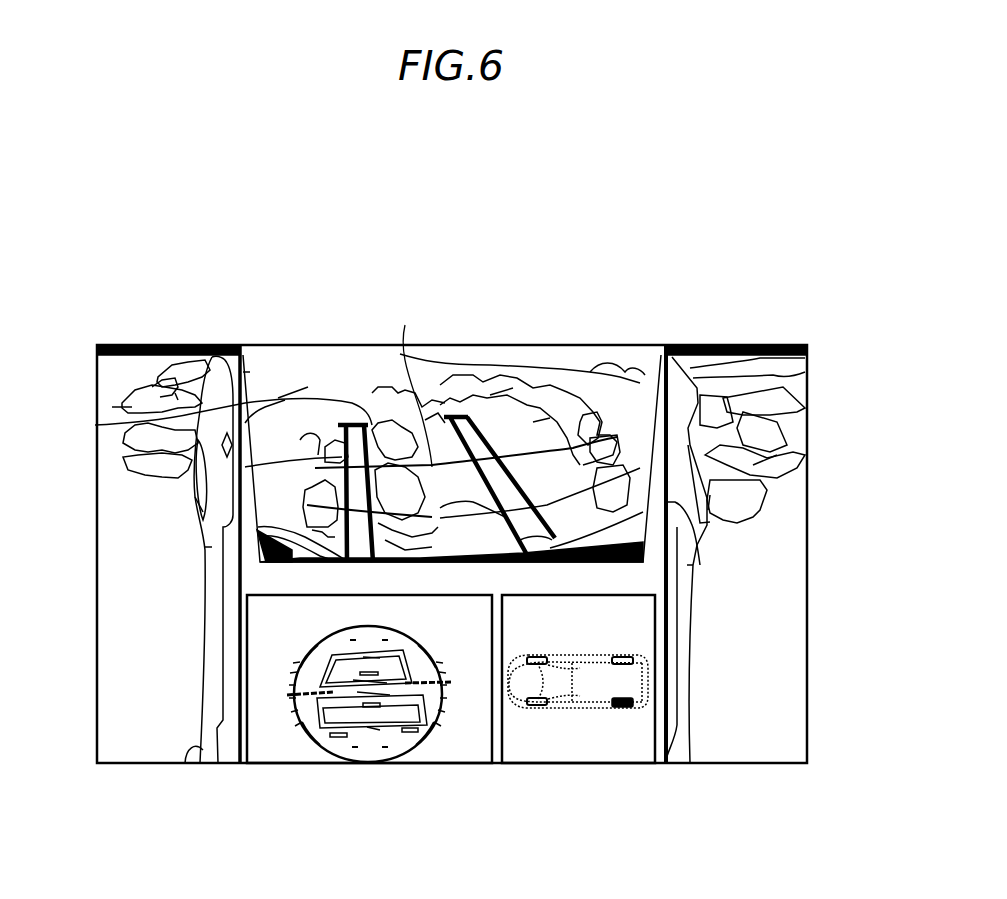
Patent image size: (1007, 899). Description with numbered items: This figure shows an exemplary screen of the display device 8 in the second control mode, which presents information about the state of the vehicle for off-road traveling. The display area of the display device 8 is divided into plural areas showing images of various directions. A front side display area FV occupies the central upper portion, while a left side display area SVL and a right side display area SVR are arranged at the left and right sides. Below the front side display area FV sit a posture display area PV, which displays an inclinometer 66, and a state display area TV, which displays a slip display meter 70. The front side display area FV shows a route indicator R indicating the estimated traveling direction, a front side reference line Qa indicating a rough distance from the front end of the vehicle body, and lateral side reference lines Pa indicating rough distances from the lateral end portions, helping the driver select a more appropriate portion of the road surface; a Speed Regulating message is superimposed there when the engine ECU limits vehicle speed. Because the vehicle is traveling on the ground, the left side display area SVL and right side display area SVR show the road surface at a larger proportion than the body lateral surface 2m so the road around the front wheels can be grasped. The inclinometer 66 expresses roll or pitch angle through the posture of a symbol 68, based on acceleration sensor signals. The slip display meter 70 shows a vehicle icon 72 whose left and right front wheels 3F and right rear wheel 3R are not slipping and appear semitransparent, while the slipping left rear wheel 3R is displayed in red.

The display device 8 is at (716, 340).
The front side display area FV is at (596, 354).
The front side reference line Qa is at (412, 383).
The route indicator R is at (493, 440).
The lateral side reference lines Pa is at (528, 418).
The left side display area SVL is at (126, 765).
The right side display area SVR is at (765, 765).
The body lateral surface 2m is at (205, 547).
The posture display area PV is at (470, 765).
The inclinometer 66 is at (296, 762).
The symbol 68 is at (392, 714).
The state display area TV is at (640, 765).
The slip display meter 70 is at (523, 765).
The vehicle icon 72 is at (572, 685).
The front wheels 3F is at (195, 497).
The rear wheels 3R is at (622, 657).